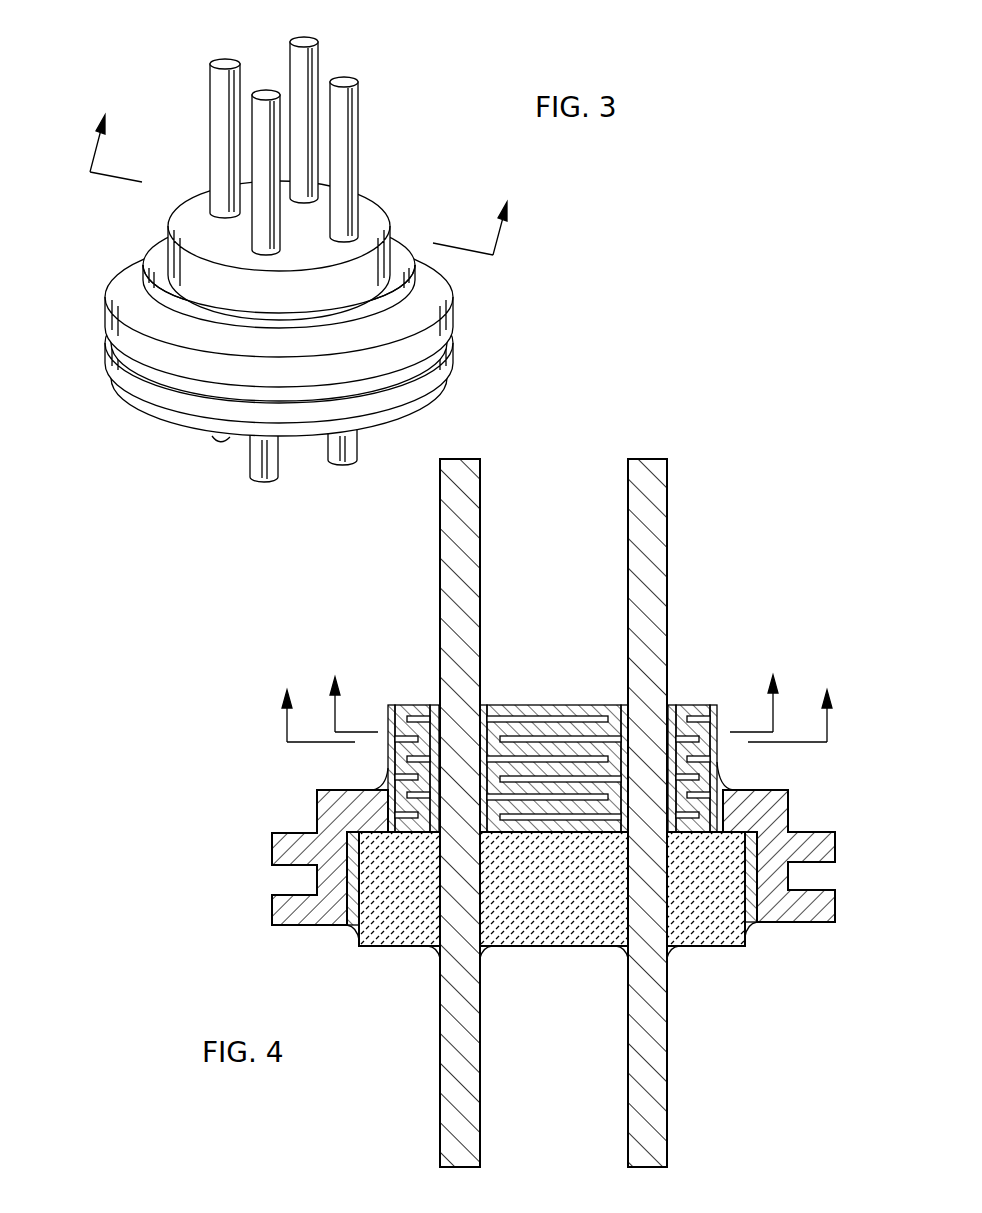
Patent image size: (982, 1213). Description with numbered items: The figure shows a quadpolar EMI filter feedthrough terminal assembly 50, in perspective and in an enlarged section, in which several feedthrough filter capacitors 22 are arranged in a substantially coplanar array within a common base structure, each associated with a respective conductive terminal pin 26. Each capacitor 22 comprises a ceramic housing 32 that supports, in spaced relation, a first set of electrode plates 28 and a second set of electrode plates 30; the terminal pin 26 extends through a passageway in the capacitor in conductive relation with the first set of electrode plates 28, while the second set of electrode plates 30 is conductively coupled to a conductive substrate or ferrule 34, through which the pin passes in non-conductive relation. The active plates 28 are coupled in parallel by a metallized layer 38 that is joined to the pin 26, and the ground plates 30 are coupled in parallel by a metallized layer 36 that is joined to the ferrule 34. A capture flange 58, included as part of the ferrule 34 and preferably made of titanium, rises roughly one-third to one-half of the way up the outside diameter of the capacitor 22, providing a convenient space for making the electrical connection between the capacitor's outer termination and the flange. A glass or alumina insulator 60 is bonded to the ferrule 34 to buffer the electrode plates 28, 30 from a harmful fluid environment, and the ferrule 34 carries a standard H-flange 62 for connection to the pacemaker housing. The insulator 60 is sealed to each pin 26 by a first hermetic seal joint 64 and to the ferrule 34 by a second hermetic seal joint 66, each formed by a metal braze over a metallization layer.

In FIG. 3, the feedthrough filter capacitor 22 is at (380, 190).
In FIG. 4, the feedthrough filter capacitor 22 is at (700, 685).
In FIG. 3, the terminal pin 26 is at (307, 246).
In FIG. 4, the terminal pin 26 is at (462, 459).
In FIG. 4, the first set of electrode plates 28 is at (537, 720).
In FIG. 4, the second set of electrode plates 30 is at (403, 740).
In FIG. 4, the ceramic housing 32 is at (573, 705).
In FIG. 3, the ferrule 34 is at (443, 293).
In FIG. 4, the ferrule 34 is at (292, 833).
In FIG. 4, the metallized layer 36 is at (388, 768).
In FIG. 4, the metallized layer 38 is at (436, 737).
In FIG. 3, the feedthrough filter terminal assembly 50 is at (100, 447).
In FIG. 4, the feedthrough filter terminal assembly 50 is at (250, 974).
In FIG. 3, the capture flange 58 is at (231, 335).
In FIG. 4, the capture flange 58 is at (788, 789).
In FIG. 4, the insulator 60 is at (557, 917).
In FIG. 4, the H-flange 62 is at (290, 895).
In FIG. 4, the first hermetic seal joint 64 is at (435, 952).
In FIG. 4, the second hermetic seal joint 66 is at (355, 930).